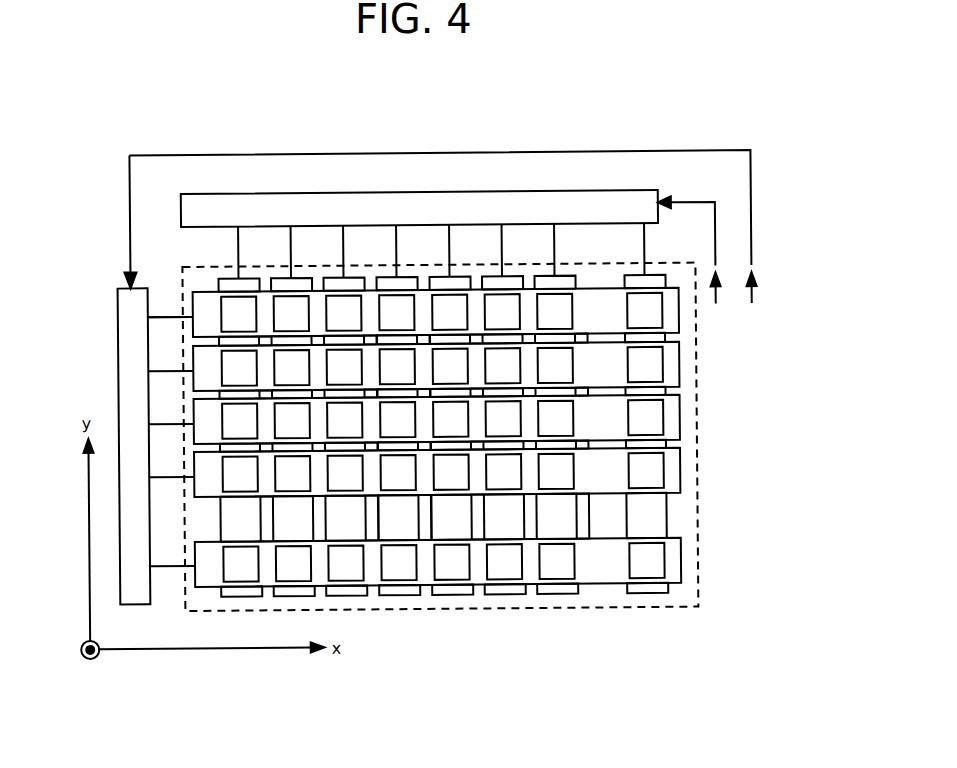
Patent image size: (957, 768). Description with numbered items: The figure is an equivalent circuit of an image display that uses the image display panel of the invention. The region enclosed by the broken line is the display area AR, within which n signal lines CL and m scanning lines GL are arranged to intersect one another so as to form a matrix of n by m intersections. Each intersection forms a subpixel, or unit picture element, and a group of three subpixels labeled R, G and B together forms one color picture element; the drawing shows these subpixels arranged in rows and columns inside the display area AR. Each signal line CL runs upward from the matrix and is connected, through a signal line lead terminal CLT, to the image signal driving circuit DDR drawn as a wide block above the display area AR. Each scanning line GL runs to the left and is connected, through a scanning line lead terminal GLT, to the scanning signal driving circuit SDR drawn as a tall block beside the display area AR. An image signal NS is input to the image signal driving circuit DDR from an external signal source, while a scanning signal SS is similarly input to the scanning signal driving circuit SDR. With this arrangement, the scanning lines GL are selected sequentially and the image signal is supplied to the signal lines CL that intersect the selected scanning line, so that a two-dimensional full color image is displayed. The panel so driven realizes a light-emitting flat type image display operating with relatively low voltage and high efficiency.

The image signal driving circuit DDR is at (210, 194).
The signal line lead terminal CLT is at (238, 253).
The signal line CL is at (225, 282).
The scanning line GL is at (193, 305).
The scanning line lead terminal GLT is at (168, 318).
The scanning signal driving circuit SDR is at (118, 320).
The image signal NS is at (693, 263).
The scanning signal SS is at (443, 242).
The display area AR is at (698, 527).